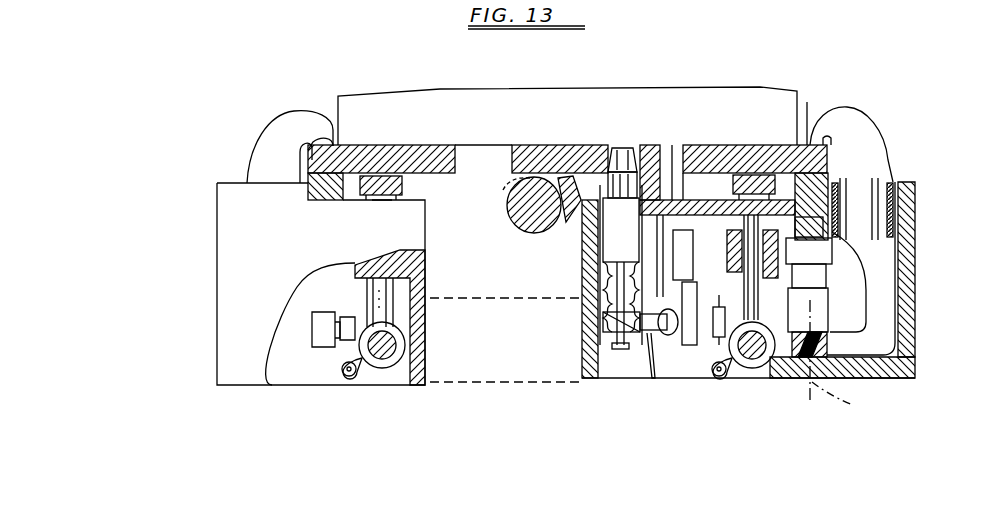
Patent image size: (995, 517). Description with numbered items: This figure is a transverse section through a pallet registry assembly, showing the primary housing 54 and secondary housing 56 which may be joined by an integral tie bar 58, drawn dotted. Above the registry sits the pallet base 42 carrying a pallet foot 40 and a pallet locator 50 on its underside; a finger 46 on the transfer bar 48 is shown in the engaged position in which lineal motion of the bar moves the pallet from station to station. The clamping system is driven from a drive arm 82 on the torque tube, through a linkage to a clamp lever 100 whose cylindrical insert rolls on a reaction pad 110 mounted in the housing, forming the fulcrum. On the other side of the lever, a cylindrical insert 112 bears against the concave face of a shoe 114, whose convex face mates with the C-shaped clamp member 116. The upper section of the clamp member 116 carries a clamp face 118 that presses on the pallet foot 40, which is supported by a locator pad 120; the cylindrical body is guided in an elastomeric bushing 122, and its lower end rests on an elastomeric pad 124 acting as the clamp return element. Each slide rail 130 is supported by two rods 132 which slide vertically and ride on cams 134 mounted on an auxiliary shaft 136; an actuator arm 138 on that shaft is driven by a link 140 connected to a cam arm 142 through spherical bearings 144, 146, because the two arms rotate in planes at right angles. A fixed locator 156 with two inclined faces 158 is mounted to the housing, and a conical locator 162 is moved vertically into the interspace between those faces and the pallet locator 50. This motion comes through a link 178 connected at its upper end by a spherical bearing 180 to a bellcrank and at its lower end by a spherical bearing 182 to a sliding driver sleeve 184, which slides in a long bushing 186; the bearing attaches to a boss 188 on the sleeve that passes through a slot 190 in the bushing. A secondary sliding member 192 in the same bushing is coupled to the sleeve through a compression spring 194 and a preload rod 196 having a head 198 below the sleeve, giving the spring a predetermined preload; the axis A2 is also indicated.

The pallet foot 40 is at (456, 159).
The pallet base 42 is at (763, 88).
The finger 46 is at (530, 203).
The transfer bar 48 is at (512, 222).
The pallet locator 50 is at (603, 143).
The primary housing 54 is at (590, 368).
The secondary housing 56 is at (428, 261).
The tie bar 58 is at (490, 296).
The drive arm 82 is at (320, 337).
The clamp lever 100 is at (829, 251).
The reaction pad 110 is at (836, 230).
The cylindrical insert 112 is at (822, 273).
The shoe 114 is at (814, 293).
The clamp member 116 is at (272, 124).
The clamp face 118 is at (330, 150).
The locator pad 120 is at (320, 197).
The elastomeric bushing 122 is at (893, 186).
The elastomeric pad 124 is at (818, 344).
The slide rail 130 is at (394, 184).
The rod 132 is at (431, 310).
The cam 134 is at (388, 358).
The auxiliary shaft 136 is at (438, 349).
The actuator arm 138 is at (356, 374).
The link 140 is at (328, 318).
The cam arm 142 is at (703, 378).
The spherical bearing 144 is at (720, 378).
The spherical bearing 146 is at (728, 318).
The fixed locator 156 is at (665, 145).
The locator face 158 is at (650, 145).
The conical locator 162 is at (634, 145).
The link 178 is at (686, 288).
The spherical bearing 180 is at (667, 252).
The spherical bearing 182 is at (661, 336).
The sliding driver sleeve 184 is at (657, 322).
The bushing 186 is at (584, 242).
The boss 188 is at (632, 376).
The slot 190 is at (612, 378).
The secondary sliding member 192 is at (621, 265).
The compression spring 194 is at (598, 296).
The preload rod 196 is at (618, 318).
The head 198 is at (590, 376).
The axis A2 is at (847, 363).